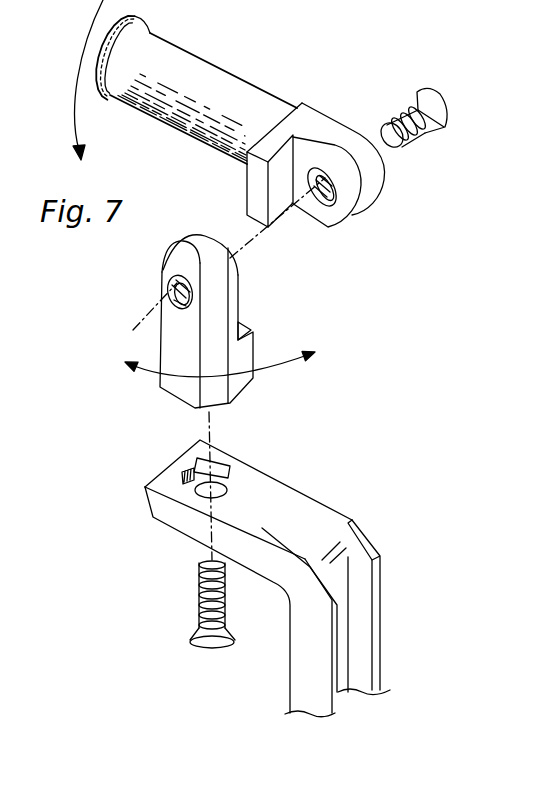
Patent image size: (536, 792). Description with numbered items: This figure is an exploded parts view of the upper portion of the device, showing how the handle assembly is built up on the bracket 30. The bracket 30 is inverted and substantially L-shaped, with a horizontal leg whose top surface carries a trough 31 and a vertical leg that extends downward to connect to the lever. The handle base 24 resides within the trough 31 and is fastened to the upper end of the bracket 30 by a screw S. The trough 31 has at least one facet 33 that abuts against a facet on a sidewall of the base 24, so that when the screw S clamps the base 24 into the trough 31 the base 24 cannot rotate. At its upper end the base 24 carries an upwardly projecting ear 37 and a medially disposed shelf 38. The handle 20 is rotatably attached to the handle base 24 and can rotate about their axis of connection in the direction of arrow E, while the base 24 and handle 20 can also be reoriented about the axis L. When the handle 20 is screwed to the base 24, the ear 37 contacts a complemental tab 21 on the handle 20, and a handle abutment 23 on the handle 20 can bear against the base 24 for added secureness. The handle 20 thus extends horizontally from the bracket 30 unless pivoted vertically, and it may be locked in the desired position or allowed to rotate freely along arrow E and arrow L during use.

The handle 20 is at (197, 83).
The complemental tab 21 is at (342, 212).
The handle abutment 23 is at (280, 170).
The handle base 24 is at (254, 397).
The bracket 30 is at (256, 572).
The trough 31 is at (260, 510).
The facet 33 is at (230, 468).
The ear 37 is at (210, 265).
The shelf 38 is at (252, 328).
The screw S is at (422, 110).
The arrow E is at (78, 80).
The axis L is at (220, 377).